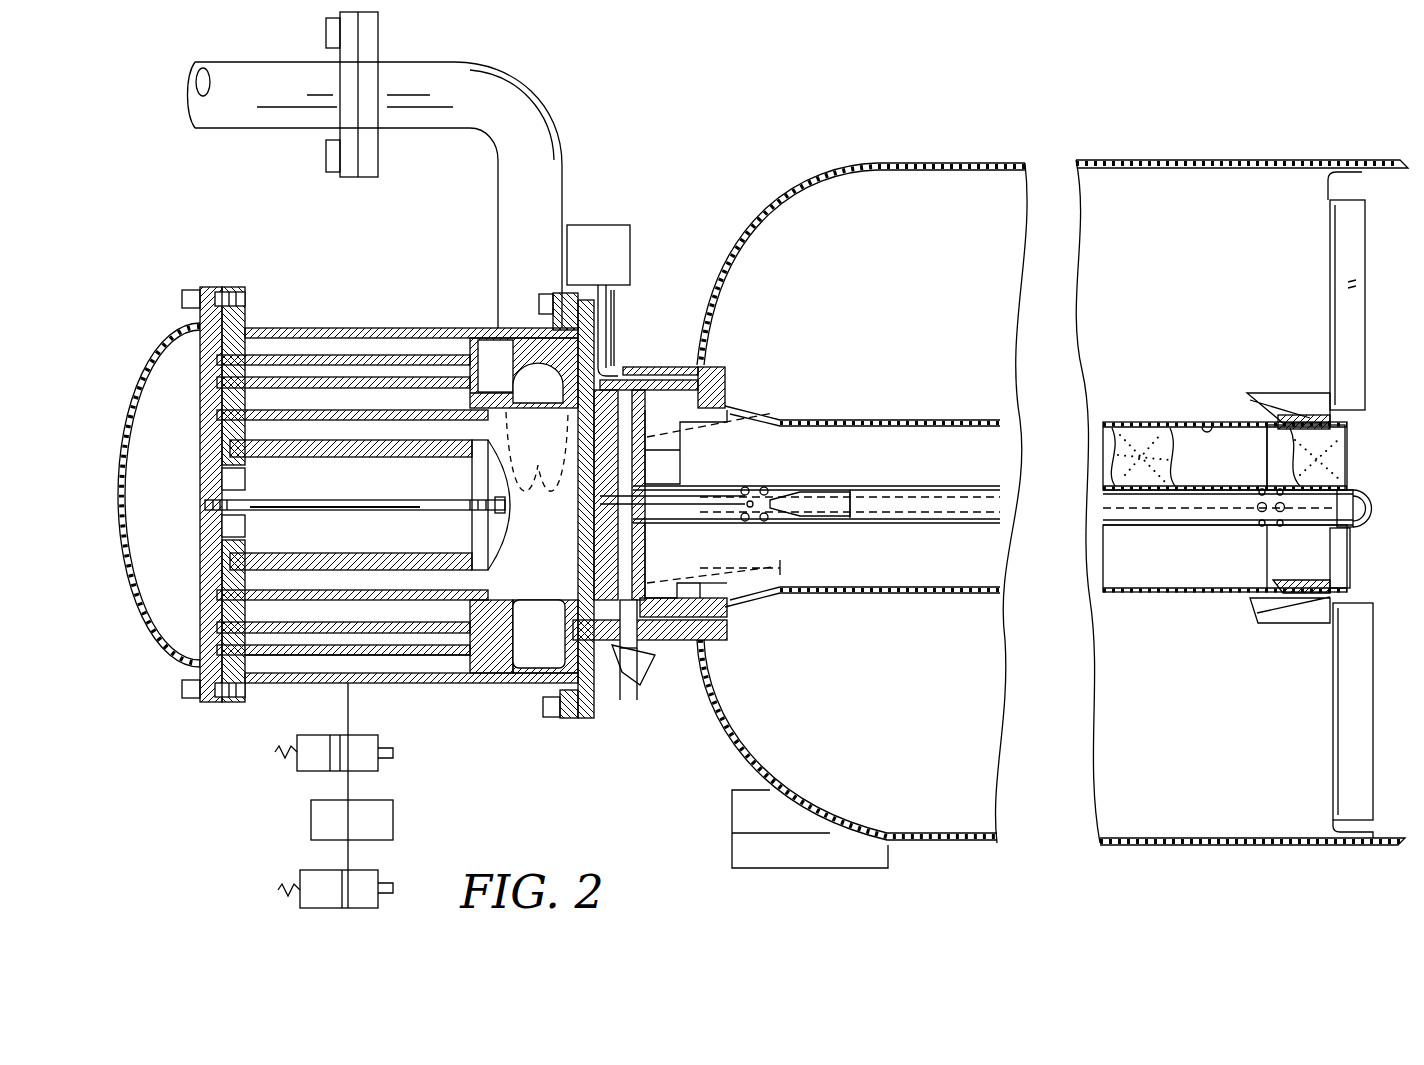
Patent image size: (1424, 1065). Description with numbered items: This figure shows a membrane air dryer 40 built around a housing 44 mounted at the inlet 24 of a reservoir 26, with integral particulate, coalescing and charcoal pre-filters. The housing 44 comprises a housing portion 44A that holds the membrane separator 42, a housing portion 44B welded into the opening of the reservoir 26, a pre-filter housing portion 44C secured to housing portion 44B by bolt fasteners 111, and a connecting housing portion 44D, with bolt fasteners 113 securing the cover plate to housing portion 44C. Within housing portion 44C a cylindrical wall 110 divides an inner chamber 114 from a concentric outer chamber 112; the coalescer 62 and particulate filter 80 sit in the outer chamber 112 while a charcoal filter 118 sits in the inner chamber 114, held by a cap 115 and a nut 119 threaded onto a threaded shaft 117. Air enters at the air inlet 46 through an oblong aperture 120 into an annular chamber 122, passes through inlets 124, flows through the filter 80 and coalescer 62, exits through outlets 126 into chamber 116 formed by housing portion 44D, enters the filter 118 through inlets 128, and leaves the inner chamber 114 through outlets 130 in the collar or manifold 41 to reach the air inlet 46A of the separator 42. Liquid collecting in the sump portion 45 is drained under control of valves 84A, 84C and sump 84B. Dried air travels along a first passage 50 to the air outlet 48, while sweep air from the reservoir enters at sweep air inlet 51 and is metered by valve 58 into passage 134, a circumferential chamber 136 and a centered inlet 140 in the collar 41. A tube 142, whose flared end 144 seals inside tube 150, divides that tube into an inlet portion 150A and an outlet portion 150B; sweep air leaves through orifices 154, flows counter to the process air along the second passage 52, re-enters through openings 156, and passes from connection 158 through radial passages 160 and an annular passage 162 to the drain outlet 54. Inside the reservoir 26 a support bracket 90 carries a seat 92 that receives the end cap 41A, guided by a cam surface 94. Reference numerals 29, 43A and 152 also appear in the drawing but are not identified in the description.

The reservoir inlet 24 is at (703, 360).
The reservoir 26 is at (920, 163).
The support 29 is at (800, 848).
The membrane air dryer 40 is at (1157, 413).
The collar or manifold 41 is at (717, 573).
The end cap 41A is at (1263, 563).
The membrane separator 42 is at (1135, 447).
The flange 43A is at (1332, 598).
The housing 44 is at (676, 360).
The membrane filter housing portion 44A is at (910, 420).
The housing portion 44B is at (628, 355).
The pre-filter housing portion 44C is at (348, 335).
The connecting housing portion 44D is at (148, 374).
The sump portion 45 is at (393, 663).
The air inlet 46 is at (366, 52).
The membrane separator air inlet 46A is at (781, 420).
The air outlet 48 is at (1348, 473).
The first passage 50 is at (1200, 488).
The sweep air inlet 51 is at (727, 380).
The second passage 52 is at (1200, 420).
The liquid drain outlet 54 is at (645, 680).
The valve 58 is at (590, 222).
The coalescer 62 is at (313, 652).
The particulate filter 80 is at (443, 628).
The valve 84A is at (297, 766).
The sump 84B is at (311, 824).
The valve 84C is at (300, 882).
The support bracket 90 is at (1370, 310).
The seat 92 is at (1306, 407).
The cam surface 94 is at (1267, 409).
The cylindrical wall 110 is at (290, 410).
The fasteners 111 is at (543, 312).
The outer chamber 112 is at (322, 328).
The fasteners 113 is at (195, 290).
The inner chamber 114 is at (383, 430).
The cap 115 is at (498, 558).
The chamber 116 is at (163, 596).
The threaded shaft 117 is at (405, 502).
The third filter 118 is at (335, 458).
The nut 119 is at (495, 508).
The aperture 120 is at (515, 370).
The annular chamber 122 is at (523, 660).
The inlets 124 is at (438, 378).
The outlets 126 is at (182, 345).
The inlets 128 is at (205, 473).
The outlets 130 is at (648, 365).
The passage 134 is at (616, 310).
The circumferential chamber 136 is at (600, 720).
The centered inlet 140 is at (580, 511).
The tube 142 is at (697, 503).
The flared end 144 is at (852, 492).
The tube 150 is at (837, 523).
The inlet portion 150A is at (923, 486).
The outlet portion 150B is at (727, 480).
The cap 152 is at (1374, 517).
The orifices 154 is at (1257, 503).
The openings 156 is at (770, 483).
The outlet connection 158 is at (655, 459).
The radial passages 160 is at (677, 580).
The annular passage 162 is at (630, 705).